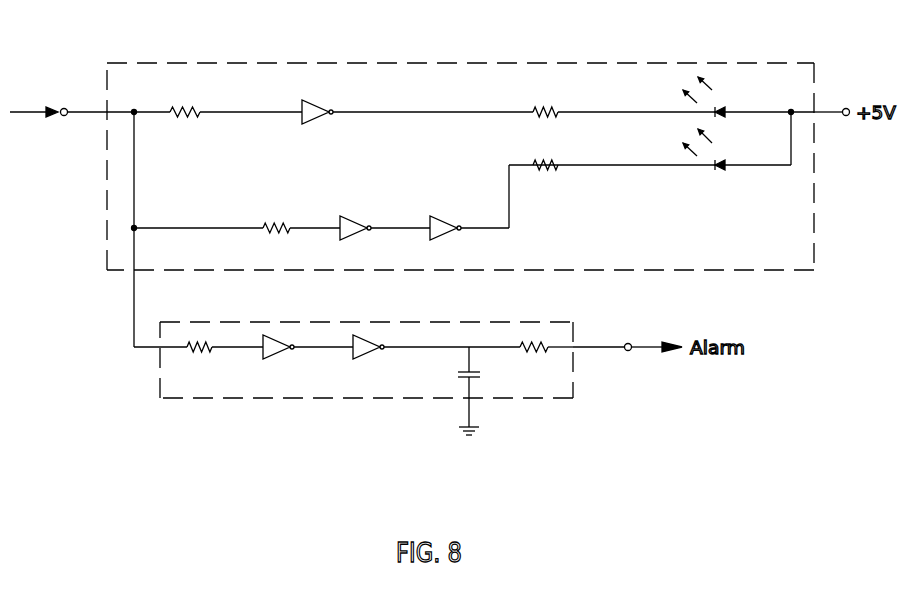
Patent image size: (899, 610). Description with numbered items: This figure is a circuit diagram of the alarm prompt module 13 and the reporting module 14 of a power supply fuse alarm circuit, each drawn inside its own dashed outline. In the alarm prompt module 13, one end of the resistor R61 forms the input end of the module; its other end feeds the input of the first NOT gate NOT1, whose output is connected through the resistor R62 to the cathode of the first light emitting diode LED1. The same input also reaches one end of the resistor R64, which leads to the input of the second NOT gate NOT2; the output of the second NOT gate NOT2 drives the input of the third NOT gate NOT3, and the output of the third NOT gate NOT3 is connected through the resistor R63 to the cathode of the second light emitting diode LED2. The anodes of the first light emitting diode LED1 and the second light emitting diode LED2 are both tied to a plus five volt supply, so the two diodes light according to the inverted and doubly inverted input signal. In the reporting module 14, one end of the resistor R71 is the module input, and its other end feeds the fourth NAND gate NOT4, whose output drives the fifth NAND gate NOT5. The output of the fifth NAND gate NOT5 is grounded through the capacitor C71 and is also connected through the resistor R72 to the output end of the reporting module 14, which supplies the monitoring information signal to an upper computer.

The alarm prompt module 13 is at (433, 63).
The reporting module 14 is at (233, 398).
The resistor R61 is at (186, 124).
The resistor R62 is at (545, 125).
The resistor R63 is at (545, 178).
The resistor R64 is at (275, 242).
The resistor R71 is at (198, 359).
The resistor R72 is at (532, 360).
The capacitor C71 is at (447, 391).
The first NOT gate NOT1 is at (314, 101).
The second NOT gate NOT2 is at (355, 241).
The third NOT gate NOT3 is at (445, 241).
The fourth NAND gate NOT4 is at (276, 360).
The fifth NAND gate NOT5 is at (367, 360).
The first light emitting diode LED1 is at (728, 97).
The second light emitting diode LED2 is at (716, 162).